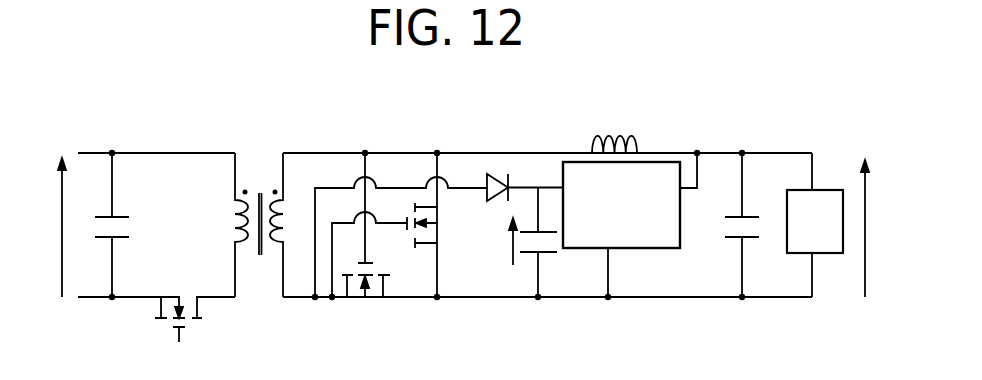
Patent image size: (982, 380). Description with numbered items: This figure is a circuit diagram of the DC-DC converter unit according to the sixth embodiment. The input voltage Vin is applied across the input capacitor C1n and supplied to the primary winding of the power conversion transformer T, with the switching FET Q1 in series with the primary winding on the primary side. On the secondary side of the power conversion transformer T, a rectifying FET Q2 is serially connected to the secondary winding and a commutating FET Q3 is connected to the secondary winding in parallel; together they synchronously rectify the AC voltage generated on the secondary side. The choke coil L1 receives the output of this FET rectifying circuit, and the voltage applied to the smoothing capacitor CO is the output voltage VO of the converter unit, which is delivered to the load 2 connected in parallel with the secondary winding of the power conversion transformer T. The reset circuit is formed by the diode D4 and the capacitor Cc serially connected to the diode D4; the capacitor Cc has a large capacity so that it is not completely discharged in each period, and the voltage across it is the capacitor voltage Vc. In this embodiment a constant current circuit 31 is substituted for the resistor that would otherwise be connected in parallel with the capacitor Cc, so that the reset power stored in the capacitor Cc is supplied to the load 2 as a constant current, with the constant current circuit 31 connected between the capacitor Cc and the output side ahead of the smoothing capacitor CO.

The load 2 is at (830, 190).
The constant current circuit 31 is at (681, 213).
The power conversion transformer T is at (259, 209).
The FET Q1 is at (164, 322).
The rectifying FET Q2 is at (366, 297).
The commutating FET Q3 is at (420, 225).
The input capacitor C1n is at (138, 225).
The capacitor Cc is at (547, 242).
The smoothing capacitor CO is at (728, 225).
The choke coil L1 is at (614, 132).
The diode D4 is at (510, 179).
The input voltage Vin is at (38, 227).
The capacitor voltage Vc is at (492, 241).
The output voltage VO is at (883, 228).